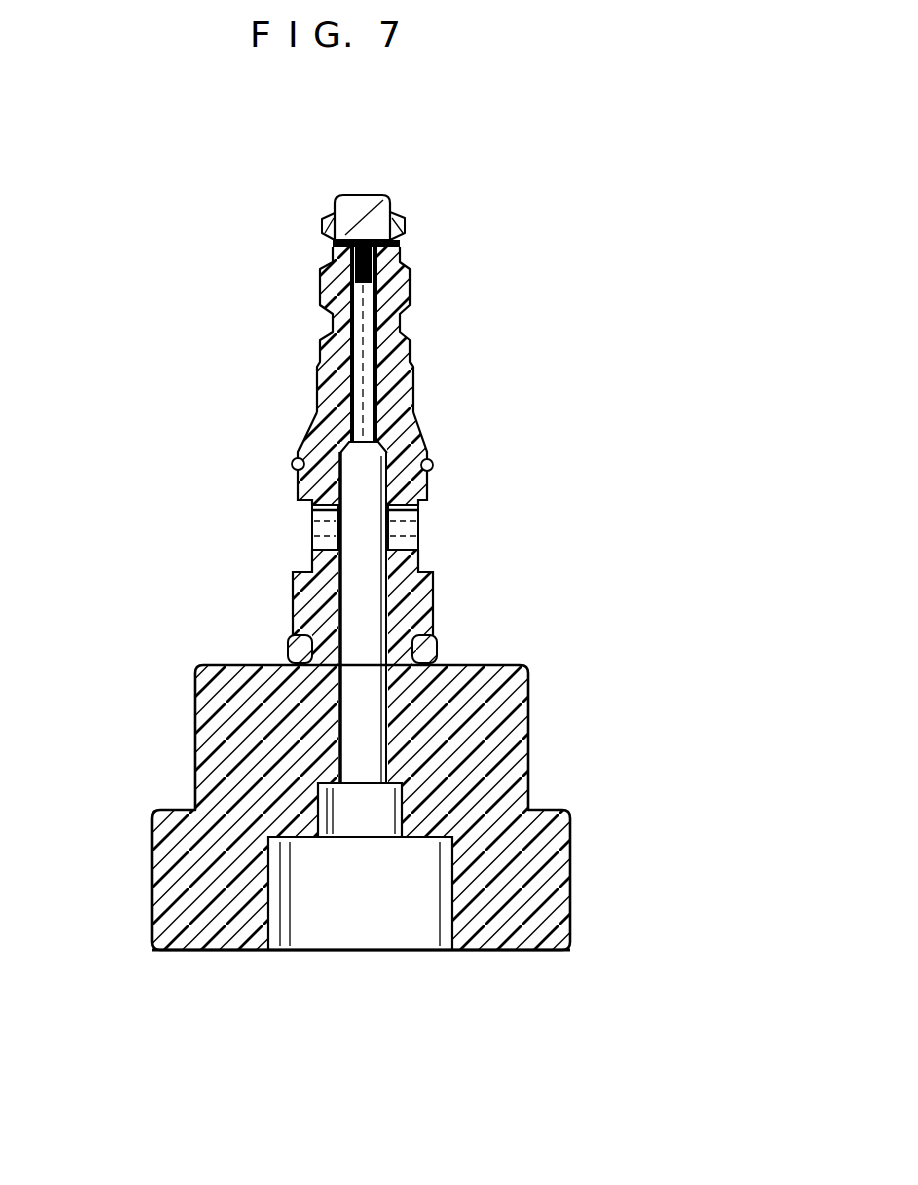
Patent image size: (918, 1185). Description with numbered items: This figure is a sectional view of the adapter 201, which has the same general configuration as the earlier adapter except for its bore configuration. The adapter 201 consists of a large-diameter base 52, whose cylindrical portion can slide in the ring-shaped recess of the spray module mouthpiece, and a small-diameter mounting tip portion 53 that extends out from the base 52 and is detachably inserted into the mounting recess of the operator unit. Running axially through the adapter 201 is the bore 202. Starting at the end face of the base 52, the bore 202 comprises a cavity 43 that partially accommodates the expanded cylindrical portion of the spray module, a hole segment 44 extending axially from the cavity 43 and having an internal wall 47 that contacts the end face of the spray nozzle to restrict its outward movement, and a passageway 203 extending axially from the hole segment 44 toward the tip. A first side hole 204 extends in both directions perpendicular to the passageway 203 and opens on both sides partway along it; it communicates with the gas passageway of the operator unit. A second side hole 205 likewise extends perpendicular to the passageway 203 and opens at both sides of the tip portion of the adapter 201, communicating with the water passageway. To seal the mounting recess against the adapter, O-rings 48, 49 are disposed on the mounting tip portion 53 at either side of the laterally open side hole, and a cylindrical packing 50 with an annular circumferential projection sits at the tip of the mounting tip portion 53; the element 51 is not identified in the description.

The adapter 201 is at (455, 218).
The bore 202 is at (352, 950).
The passageway 203 is at (370, 712).
The first side hole 204 is at (415, 525).
The second side hole 205 is at (345, 250).
The cavity 43 is at (402, 920).
The hole segment 44 is at (378, 815).
The internal wall 47 is at (325, 783).
The O-ring 48 is at (432, 635).
The O-ring 49 is at (430, 462).
The cylindrical packing 50 is at (408, 287).
The upper body portion 51 is at (257, 663).
The large-diameter base 52 is at (95, 948).
The small-diameter mounting tip portion 53 is at (95, 648).